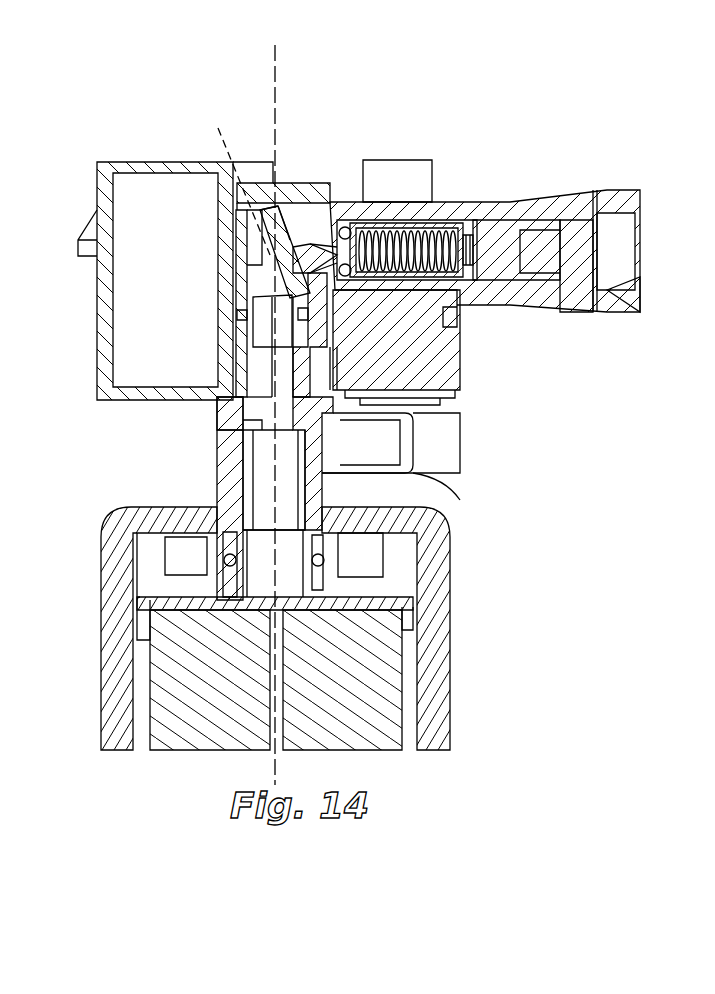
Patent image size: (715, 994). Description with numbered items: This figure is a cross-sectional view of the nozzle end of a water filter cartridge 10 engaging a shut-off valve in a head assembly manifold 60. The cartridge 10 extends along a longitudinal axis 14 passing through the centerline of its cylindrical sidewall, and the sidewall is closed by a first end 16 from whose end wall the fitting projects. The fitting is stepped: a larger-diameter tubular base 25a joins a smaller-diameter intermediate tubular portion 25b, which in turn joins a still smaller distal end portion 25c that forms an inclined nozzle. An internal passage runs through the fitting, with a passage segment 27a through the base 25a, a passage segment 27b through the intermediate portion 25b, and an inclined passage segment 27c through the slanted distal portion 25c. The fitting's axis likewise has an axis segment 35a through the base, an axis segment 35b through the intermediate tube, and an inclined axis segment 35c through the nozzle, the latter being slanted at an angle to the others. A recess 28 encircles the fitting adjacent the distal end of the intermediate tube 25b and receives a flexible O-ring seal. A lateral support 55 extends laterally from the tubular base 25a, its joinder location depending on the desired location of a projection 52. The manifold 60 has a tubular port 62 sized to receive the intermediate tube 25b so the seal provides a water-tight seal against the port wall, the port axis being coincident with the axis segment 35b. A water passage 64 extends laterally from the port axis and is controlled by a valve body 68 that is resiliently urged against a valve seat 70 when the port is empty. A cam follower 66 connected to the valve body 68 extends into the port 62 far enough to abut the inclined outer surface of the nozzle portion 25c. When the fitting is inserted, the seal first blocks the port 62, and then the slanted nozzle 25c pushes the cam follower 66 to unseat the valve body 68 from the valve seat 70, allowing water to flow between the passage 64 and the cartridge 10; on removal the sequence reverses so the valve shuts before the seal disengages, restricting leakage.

The water filter cartridge 10 is at (80, 579).
The longitudinal axis 14 is at (282, 56).
The first end 16 is at (380, 503).
The tubular base 25a is at (370, 485).
The intermediate tubular portion 25b is at (262, 362).
The distal end portion 25c is at (243, 313).
The internal passage segment 27a is at (250, 470).
The internal passage segment 27b is at (262, 438).
The internal passage segment 27c is at (268, 266).
The recess 28 is at (250, 350).
The axis segment 35a is at (262, 460).
The axis segment 35b is at (268, 340).
The inclined axis segment 35c is at (238, 168).
The projection 52 is at (400, 403).
The lateral support 55 is at (388, 437).
The manifold 60 is at (254, 135).
The tubular port 62 is at (288, 208).
The water passage 64 is at (495, 250).
The cam follower 66 is at (336, 226).
The valve body 68 is at (322, 250).
The valve seat 70 is at (332, 257).